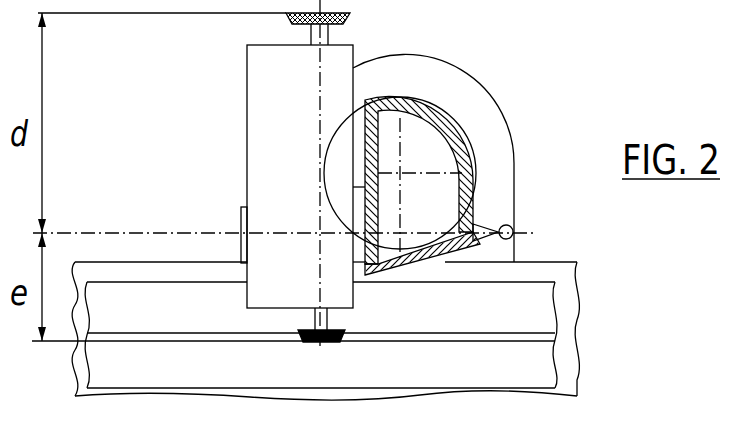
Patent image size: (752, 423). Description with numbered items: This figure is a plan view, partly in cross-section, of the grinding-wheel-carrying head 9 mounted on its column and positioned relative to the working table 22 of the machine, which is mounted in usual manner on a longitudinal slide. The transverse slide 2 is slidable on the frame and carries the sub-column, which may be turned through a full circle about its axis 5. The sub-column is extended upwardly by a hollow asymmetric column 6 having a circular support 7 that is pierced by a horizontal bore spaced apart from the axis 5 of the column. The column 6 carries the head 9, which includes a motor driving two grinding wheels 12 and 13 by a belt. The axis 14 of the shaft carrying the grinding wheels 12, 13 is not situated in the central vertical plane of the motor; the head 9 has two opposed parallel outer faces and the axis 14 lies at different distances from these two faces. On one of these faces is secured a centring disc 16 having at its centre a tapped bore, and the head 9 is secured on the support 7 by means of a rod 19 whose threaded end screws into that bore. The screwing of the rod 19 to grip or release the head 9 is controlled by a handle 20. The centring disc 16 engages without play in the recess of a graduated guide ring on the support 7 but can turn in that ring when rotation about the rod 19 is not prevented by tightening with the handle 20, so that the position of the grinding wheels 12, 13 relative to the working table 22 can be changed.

The transverse slide 2 is at (562, 364).
The axis 5 is at (400, 173).
The hollow asymmetric column 6 is at (468, 184).
The circular support 7 is at (401, 267).
The grinding-wheel-carrying head 9 is at (247, 104).
The grinding wheel 12 is at (346, 20).
The grinding wheel 13 is at (312, 343).
The axis of the shaft carrying grinding wheels 14 is at (318, 70).
The centring disc 16 is at (241, 218).
The rod 19 is at (435, 260).
The handle 20 is at (513, 237).
The working table 22 is at (535, 302).